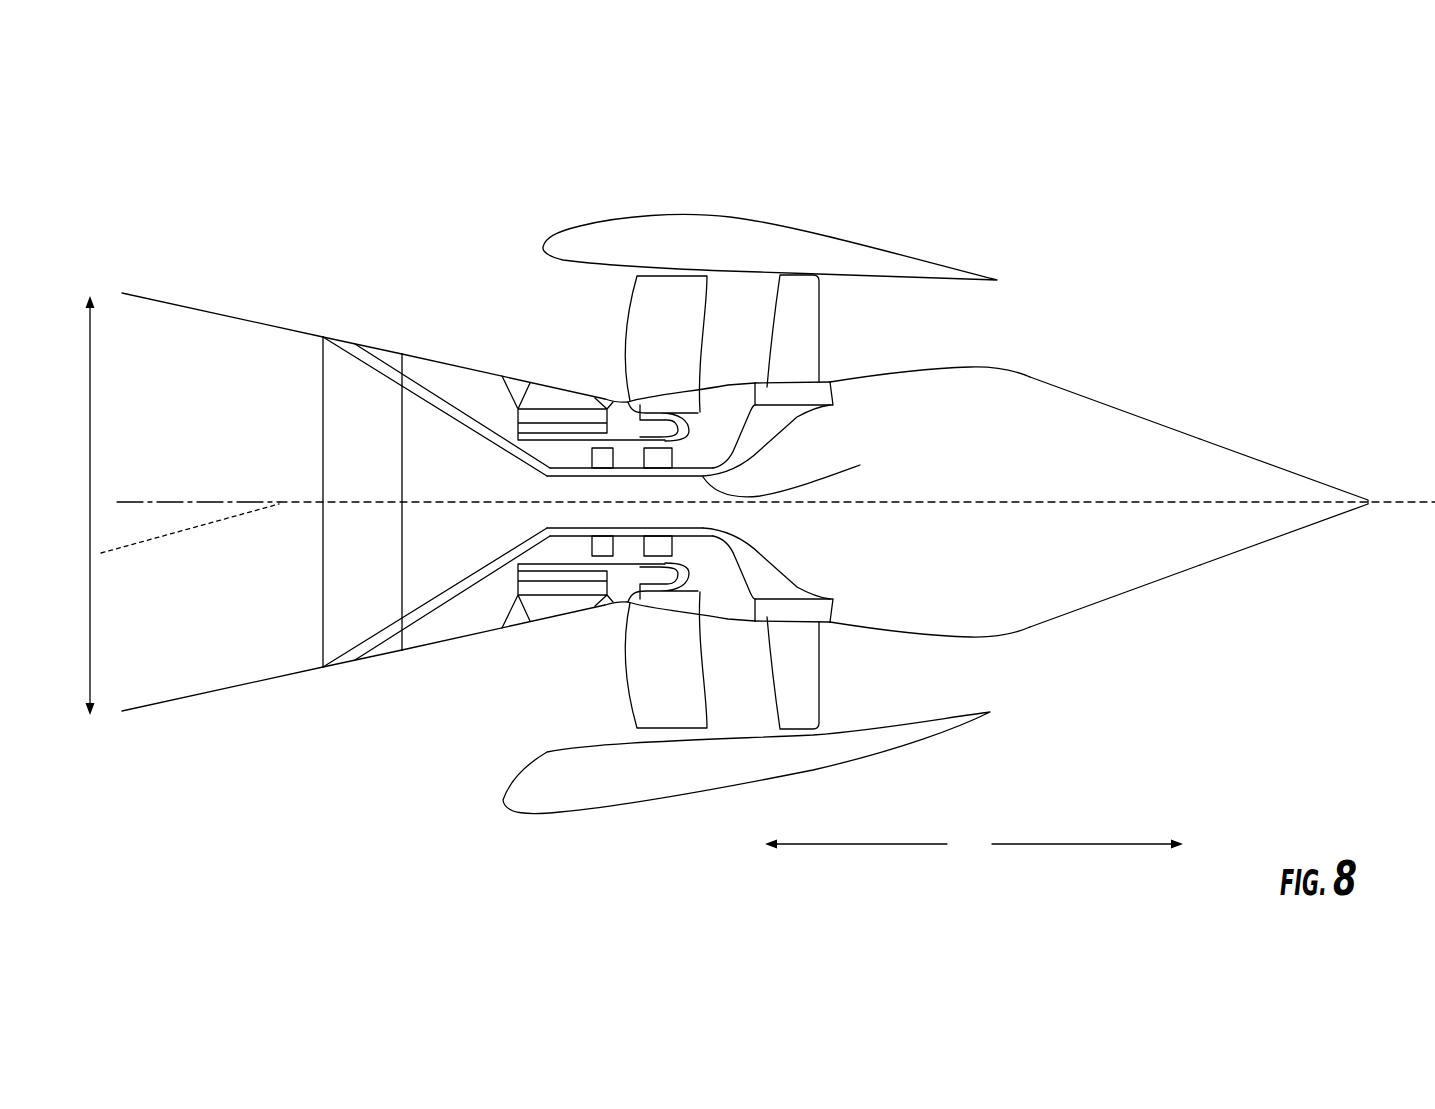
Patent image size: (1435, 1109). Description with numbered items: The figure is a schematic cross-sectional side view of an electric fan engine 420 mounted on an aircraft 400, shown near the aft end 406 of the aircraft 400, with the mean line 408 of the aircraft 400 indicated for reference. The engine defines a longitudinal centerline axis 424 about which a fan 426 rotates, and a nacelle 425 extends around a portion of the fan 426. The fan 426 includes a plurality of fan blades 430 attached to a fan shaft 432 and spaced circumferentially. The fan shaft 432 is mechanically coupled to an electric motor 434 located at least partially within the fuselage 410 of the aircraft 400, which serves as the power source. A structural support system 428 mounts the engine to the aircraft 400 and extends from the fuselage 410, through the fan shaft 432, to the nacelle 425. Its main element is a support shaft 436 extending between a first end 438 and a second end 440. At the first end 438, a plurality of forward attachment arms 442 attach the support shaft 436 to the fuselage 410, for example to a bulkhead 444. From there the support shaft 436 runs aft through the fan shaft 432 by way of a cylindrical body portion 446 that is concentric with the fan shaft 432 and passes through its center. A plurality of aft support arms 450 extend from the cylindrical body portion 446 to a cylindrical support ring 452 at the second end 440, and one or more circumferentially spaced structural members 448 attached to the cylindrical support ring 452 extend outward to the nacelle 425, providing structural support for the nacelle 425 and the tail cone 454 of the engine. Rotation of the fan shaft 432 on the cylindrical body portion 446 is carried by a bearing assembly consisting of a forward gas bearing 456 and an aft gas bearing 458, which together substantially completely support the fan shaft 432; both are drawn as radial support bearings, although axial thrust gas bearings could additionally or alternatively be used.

The aircraft 400 is at (755, 457).
The aft end 406 is at (420, 177).
The mean line 408 is at (188, 530).
The fuselage 410 is at (195, 307).
The electric fan engine 420 is at (1105, 233).
The longitudinal centerline axis 424 is at (1288, 500).
The nacelle 425 is at (767, 222).
The fan 426 is at (720, 307).
The structural support system 428 is at (857, 425).
The fan blades 430 is at (680, 328).
The fan shaft 432 is at (628, 440).
The electric motor 434 is at (516, 414).
The support shaft 436 is at (753, 532).
The first end 438 is at (375, 397).
The second end 440 is at (828, 572).
The forward attachment arms 442 is at (460, 425).
The bulkhead 444 is at (322, 582).
The cylindrical body portion 446 is at (860, 465).
The structural members 448 is at (820, 332).
The aft support arms 450 is at (773, 445).
The cylindrical support ring 452 is at (836, 392).
The tail cone 454 is at (1133, 413).
The forward gas bearing 456 is at (583, 453).
The aft gas bearing 458 is at (637, 455).